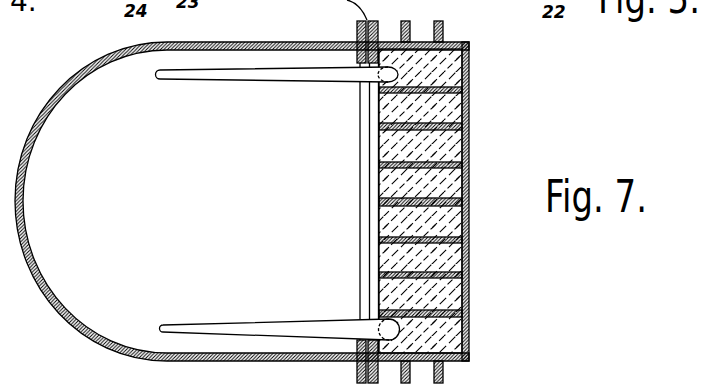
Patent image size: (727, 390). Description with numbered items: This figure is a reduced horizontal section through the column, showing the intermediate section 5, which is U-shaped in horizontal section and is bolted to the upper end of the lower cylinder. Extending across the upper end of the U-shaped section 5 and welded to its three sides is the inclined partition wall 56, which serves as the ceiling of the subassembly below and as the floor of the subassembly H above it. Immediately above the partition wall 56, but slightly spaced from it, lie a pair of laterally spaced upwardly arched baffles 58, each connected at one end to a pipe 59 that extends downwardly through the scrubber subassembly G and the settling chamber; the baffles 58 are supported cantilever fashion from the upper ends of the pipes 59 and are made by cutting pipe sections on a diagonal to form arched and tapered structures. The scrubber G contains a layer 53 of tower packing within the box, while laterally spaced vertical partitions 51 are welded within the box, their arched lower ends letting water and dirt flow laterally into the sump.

The intermediate section 5 is at (72, 325).
The vertical partitions 51 is at (440, 318).
The layer of tower packing 53 is at (463, 222).
The inclined partition wall 56 is at (285, 211).
The upwardly arched baffles 58 is at (158, 74).
The pipe 59 is at (413, 42).
The scrubber subassembly G is at (446, 191).
The subassembly H is at (238, 203).